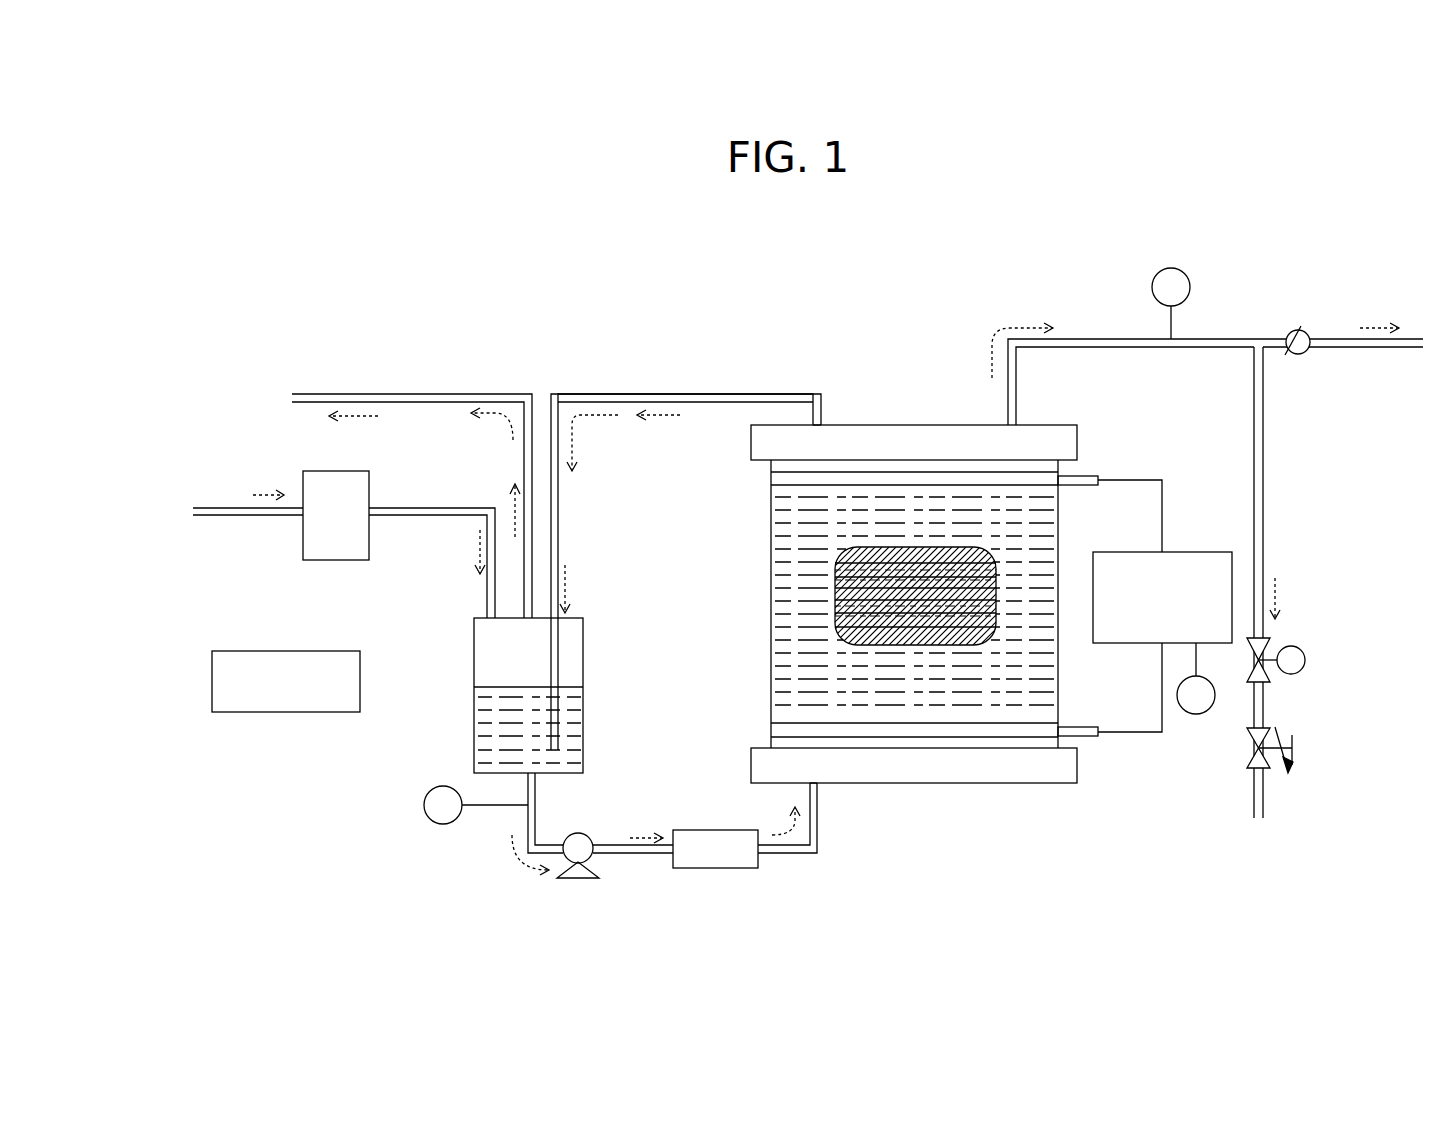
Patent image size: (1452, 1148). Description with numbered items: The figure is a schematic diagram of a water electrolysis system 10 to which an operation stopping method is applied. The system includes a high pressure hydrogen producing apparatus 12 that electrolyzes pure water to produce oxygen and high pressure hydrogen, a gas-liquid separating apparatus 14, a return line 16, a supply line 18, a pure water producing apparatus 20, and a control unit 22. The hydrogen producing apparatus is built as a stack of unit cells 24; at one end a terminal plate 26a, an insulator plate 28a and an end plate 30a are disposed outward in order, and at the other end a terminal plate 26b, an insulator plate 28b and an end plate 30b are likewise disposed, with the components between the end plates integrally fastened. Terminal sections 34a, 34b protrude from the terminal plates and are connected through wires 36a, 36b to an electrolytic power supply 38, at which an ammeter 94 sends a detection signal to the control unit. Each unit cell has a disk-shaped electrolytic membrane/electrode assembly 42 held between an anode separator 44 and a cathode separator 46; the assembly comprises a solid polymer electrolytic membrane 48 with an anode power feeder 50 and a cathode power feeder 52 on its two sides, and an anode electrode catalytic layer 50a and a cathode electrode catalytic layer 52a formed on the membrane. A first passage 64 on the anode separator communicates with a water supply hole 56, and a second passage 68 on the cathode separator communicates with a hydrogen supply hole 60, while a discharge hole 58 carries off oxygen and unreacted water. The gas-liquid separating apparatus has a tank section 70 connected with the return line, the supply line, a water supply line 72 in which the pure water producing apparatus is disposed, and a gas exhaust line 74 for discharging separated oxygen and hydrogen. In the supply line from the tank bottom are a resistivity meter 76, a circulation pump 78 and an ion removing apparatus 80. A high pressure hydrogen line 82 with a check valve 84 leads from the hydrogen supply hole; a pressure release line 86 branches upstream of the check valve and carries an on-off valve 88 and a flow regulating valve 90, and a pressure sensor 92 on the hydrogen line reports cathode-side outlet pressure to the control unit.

The water electrolysis system 10 is at (474, 280).
The high pressure hydrogen producing apparatus 12 is at (1012, 535).
The gas-liquid separating apparatus 14 is at (590, 629).
The return line 16 is at (772, 394).
The supply line 18 is at (605, 843).
The pure water producing apparatus 20 is at (318, 471).
The control unit (ECU) 22 is at (240, 651).
The unit cell 24 is at (768, 653).
The terminal plate 26a is at (935, 483).
The terminal plate 26b is at (960, 728).
The insulator plate 28a is at (908, 470).
The insulator plate 28b is at (907, 742).
The end plate 30a is at (1052, 424).
The end plate 30b is at (1052, 786).
The terminal section 34a is at (1076, 485).
The terminal section 34b is at (1077, 727).
The wire 36a is at (1160, 517).
The wire 36b is at (1160, 686).
The electrolytic power supply 38 is at (1195, 552).
The electrolytic membrane/electrode assembly 42 is at (888, 655).
The anode separator 44 is at (890, 585).
The cathode separator 46 is at (892, 620).
The solid polymer electrolytic membrane 48 is at (837, 596).
The anode power feeder 50 is at (837, 587).
The anode electrode catalytic layer 50a is at (905, 575).
The cathode power feeder 52 is at (837, 605).
The cathode electrode catalytic layer 52a is at (920, 630).
The water supply hole 56 is at (821, 785).
The discharge hole 58 is at (824, 424).
The hydrogen supply hole 60 is at (1005, 424).
The first passage 64 is at (840, 557).
The second passage 68 is at (814, 695).
The tank section 70 is at (586, 724).
The water supply line 72 is at (458, 508).
The gas exhaust line 74 is at (447, 394).
The resistivity meter 76 is at (430, 788).
The circulation pump 78 is at (578, 832).
The ion removing apparatus 80 is at (698, 830).
The high pressure hydrogen line 82 is at (1230, 340).
The check valve 84 is at (1290, 331).
The pressure release line 86 is at (1265, 440).
The on-off valve 88 is at (1306, 660).
The flow regulating valve 90 is at (1296, 746).
The pressure sensor 92 is at (1168, 268).
The ammeter 94 is at (1195, 715).